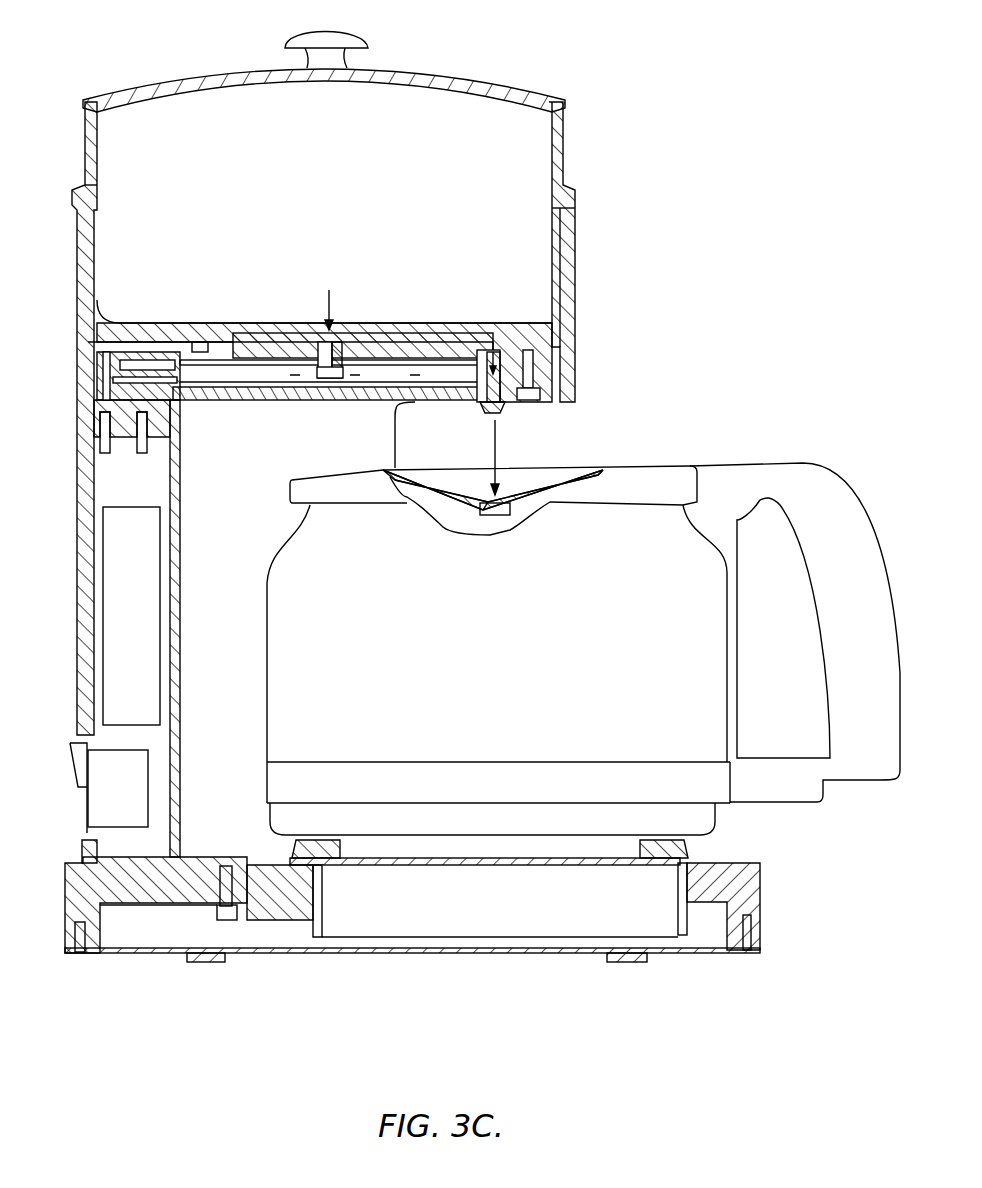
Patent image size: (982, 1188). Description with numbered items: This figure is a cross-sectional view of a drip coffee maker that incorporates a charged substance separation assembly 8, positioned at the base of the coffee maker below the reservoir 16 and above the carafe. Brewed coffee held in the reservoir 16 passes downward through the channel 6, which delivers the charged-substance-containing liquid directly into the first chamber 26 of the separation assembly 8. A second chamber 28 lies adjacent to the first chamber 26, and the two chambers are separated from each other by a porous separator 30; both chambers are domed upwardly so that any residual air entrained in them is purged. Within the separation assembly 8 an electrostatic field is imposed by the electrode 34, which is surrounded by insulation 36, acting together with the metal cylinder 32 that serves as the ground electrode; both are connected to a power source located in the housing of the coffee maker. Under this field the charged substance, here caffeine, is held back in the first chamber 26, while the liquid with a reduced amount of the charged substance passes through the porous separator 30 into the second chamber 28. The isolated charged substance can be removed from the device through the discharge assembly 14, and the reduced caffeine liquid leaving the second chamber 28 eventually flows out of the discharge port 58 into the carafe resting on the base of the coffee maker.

The charged substance separation assembly 8 is at (582, 368).
The reservoir 16 is at (348, 185).
The electrode 34 is at (232, 340).
The insulation 36 is at (268, 345).
The porous separator 30 is at (362, 345).
The second chamber 28 is at (420, 340).
The first chamber 26 is at (275, 395).
The metal cylinder 32 is at (233, 400).
The channel 6 is at (338, 340).
The discharge assembly 14 is at (495, 350).
The discharge port 58 is at (500, 412).